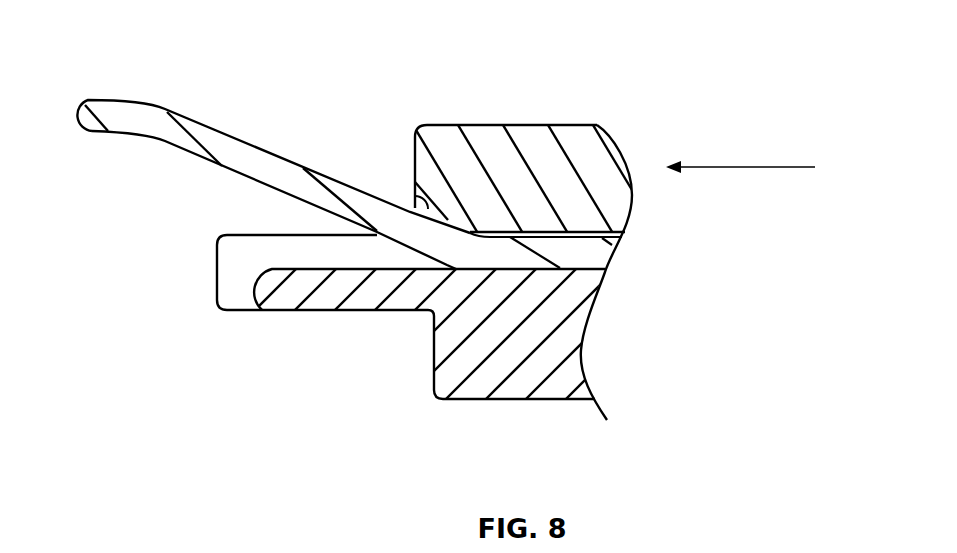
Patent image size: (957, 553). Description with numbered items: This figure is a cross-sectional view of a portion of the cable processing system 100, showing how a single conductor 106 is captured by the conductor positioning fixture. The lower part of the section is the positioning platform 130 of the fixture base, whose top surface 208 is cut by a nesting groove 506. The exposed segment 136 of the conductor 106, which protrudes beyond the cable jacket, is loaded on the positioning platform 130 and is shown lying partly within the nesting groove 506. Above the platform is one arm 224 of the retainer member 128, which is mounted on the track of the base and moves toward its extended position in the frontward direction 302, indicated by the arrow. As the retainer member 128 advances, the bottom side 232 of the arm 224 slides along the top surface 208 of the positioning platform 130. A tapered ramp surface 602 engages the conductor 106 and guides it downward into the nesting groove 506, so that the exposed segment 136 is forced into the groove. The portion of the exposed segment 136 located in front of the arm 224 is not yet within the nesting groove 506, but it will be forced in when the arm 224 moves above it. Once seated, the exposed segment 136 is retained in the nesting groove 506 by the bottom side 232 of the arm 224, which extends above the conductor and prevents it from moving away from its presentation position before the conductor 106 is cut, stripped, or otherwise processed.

The cable processing system 100 is at (470, 40).
The conductor 106 is at (282, 168).
The exposed segment 136 is at (227, 143).
The tapered ramp surface 602 is at (415, 207).
The arm 224 is at (522, 143).
The retainer member 128 is at (598, 130).
The bottom side 232 is at (550, 237).
The top surface 208 is at (268, 233).
The nesting groove 506 is at (350, 262).
The positioning platform 130 is at (538, 355).
The frontward direction 302 is at (745, 167).